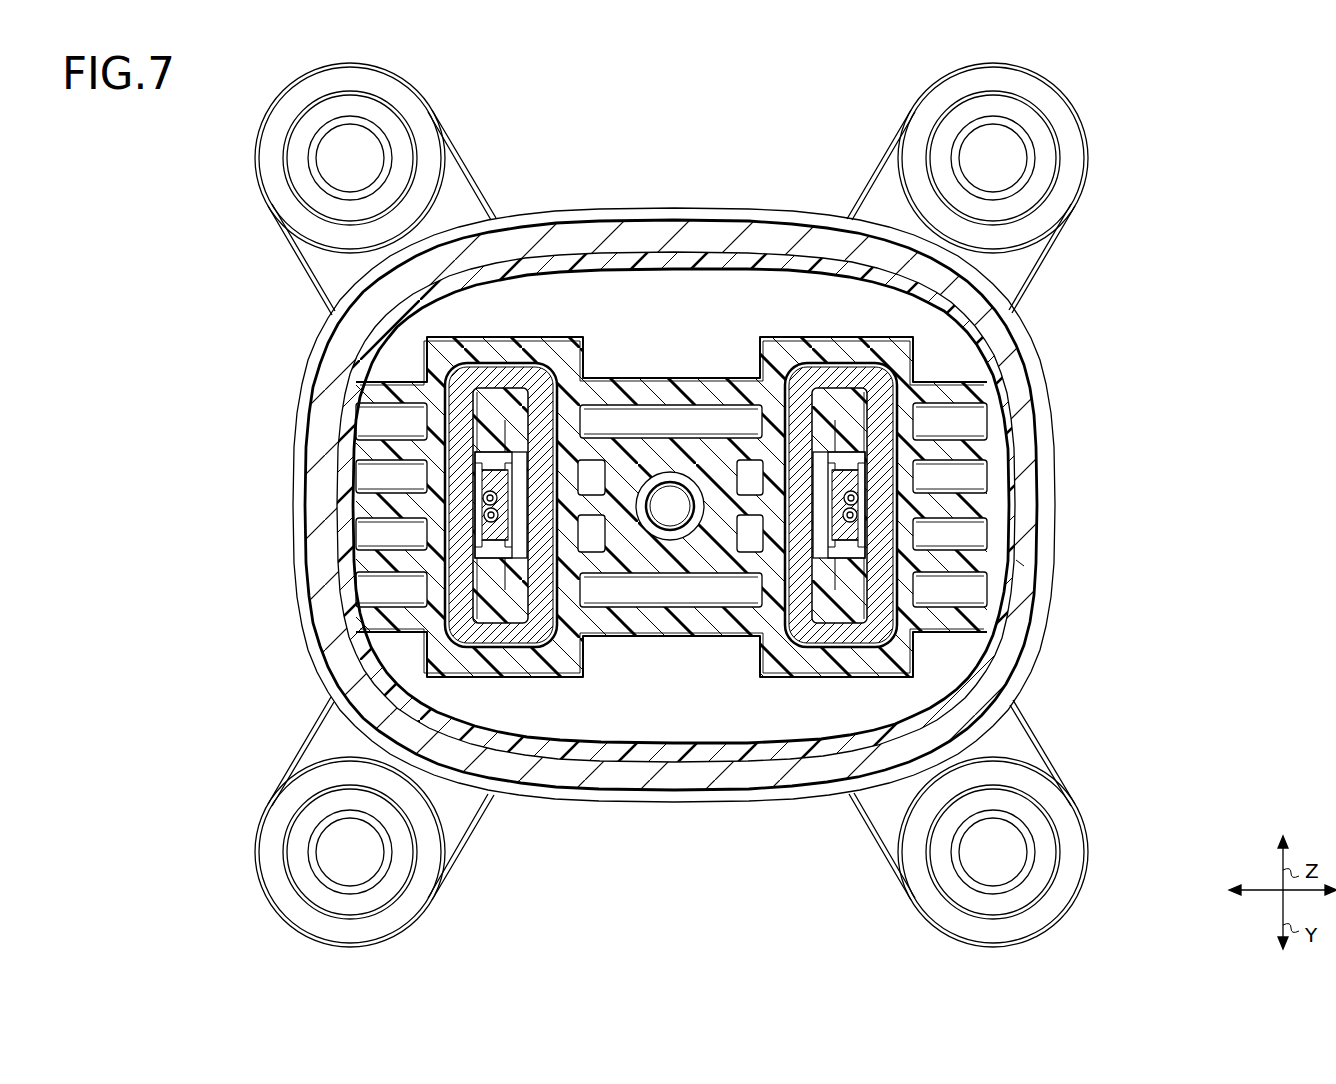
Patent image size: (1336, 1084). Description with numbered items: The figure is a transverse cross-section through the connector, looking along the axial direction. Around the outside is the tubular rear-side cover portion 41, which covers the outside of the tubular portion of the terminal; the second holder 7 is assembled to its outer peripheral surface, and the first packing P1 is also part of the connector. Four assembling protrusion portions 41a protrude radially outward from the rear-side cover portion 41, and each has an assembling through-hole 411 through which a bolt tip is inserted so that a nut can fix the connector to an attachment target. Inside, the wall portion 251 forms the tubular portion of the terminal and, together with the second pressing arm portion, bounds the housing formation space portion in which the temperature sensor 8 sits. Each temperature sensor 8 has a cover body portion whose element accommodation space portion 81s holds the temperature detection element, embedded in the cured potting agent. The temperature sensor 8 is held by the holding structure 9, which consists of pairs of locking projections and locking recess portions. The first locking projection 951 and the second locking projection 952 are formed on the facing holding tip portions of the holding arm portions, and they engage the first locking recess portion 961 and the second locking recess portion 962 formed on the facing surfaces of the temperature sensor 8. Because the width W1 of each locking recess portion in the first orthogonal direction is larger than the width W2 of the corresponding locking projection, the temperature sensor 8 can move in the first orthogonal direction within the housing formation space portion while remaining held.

The rear-side cover portion 41 is at (1010, 396).
The assembling protrusion portion 41a is at (293, 81).
The assembling through-hole 411 is at (350, 158).
The second holder 7 is at (915, 492).
The wall portion 251 is at (465, 422).
The element accommodation space portion 81s is at (625, 432).
The first locking projection 951 is at (498, 432).
The second locking projection 952 is at (500, 590).
The first locking recess portion 961 is at (820, 478).
The second locking recess portion 962 is at (820, 530).
The temperature sensor 8 is at (446, 506).
The holding structure 9 is at (592, 450).
The width of locking recess portion W1 is at (842, 430).
The width of locking projection W2 is at (842, 584).
The first packing P1 is at (1020, 562).